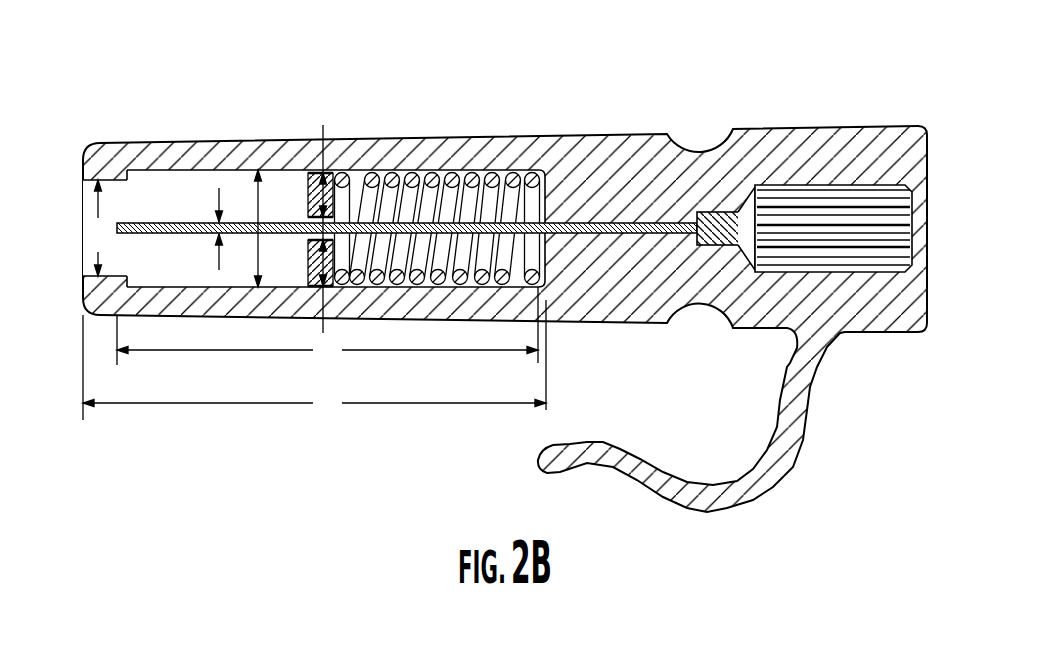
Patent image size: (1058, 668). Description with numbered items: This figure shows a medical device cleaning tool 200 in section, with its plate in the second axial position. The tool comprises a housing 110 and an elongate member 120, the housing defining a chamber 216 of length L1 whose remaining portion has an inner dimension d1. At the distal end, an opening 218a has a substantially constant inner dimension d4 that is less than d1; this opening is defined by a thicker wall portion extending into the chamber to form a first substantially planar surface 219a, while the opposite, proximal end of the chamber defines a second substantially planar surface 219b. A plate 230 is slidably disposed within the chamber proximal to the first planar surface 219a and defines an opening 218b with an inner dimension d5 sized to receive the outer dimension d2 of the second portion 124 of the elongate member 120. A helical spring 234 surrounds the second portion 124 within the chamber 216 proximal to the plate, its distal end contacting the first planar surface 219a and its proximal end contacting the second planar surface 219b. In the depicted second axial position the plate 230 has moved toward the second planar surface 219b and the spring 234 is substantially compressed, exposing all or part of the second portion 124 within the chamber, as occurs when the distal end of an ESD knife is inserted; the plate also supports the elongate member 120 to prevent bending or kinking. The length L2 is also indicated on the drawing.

The medical device cleaning tool 200 is at (143, 52).
The housing 110 is at (543, 146).
The elongate member 120 is at (598, 221).
The second portion of the elongate member 124 is at (533, 433).
The chamber 216 is at (211, 191).
The opening 218a is at (78, 241).
The opening of the plate 218b is at (337, 218).
The first substantially planar surface 219a is at (150, 143).
The second substantially planar surface 219b is at (540, 212).
The plate 230 is at (303, 275).
The spring 234 is at (518, 172).
The inner dimension of the chamber d1 is at (260, 198).
The outer dimension of the second portion d2 is at (220, 195).
The inner dimension of the opening d4 is at (98, 228).
The inner dimension of the plate opening d5 is at (323, 135).
The length of the chamber L1 is at (314, 363).
The rod length L2 is at (327, 330).